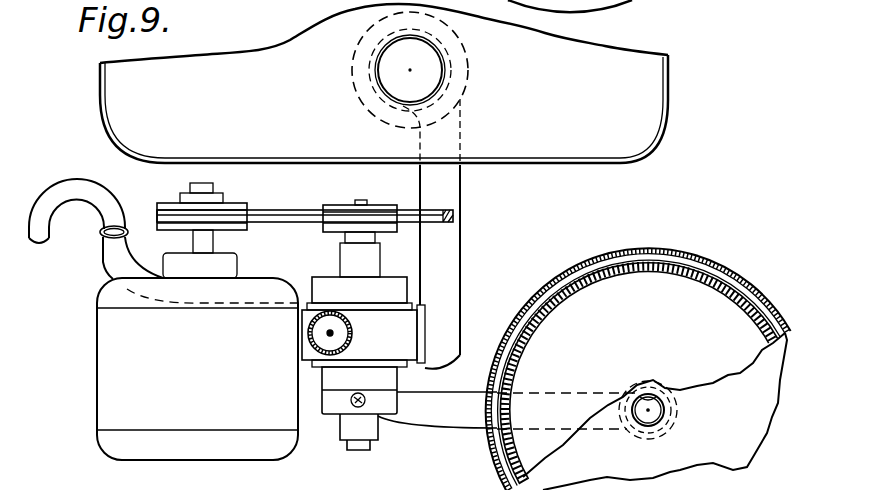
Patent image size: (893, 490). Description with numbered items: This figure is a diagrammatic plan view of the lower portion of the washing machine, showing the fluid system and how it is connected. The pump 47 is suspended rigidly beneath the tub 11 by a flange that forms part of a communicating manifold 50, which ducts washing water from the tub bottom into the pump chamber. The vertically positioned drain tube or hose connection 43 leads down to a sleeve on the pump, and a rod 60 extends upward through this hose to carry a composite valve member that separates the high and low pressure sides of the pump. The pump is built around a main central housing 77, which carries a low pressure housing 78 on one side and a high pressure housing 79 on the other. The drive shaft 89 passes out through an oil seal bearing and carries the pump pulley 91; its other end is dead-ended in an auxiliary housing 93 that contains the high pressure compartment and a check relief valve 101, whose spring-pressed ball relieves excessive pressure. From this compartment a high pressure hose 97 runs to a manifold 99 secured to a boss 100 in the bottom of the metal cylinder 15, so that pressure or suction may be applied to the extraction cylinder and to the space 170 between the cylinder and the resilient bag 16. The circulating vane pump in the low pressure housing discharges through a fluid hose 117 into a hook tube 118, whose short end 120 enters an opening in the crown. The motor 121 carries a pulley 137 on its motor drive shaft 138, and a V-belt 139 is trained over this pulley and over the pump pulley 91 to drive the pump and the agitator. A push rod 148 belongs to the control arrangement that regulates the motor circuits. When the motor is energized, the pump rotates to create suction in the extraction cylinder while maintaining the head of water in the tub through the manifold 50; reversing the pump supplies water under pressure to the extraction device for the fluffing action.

The tub 11 is at (635, 125).
The metal cylinder 15 is at (673, 250).
The resilient bag 16 is at (596, 272).
The tube or hose connection 43 is at (310, 343).
The pump 47 is at (410, 365).
The manifold 50 is at (452, 231).
The rod 60 is at (327, 333).
The main central housing 77 is at (402, 333).
The low pressure housing 78 is at (403, 287).
The high pressure housing 79 is at (321, 378).
The drive shaft 89 is at (362, 201).
The pulley 91 is at (373, 210).
The auxiliary housing 93 is at (383, 408).
The high pressure hose 97 is at (458, 423).
The manifold 99 is at (643, 396).
The boss 100 is at (673, 418).
The check relief valve 101 is at (355, 405).
The fluid hose 117 is at (110, 253).
The hook tube 118 is at (66, 183).
The short end 120 is at (40, 230).
The motor 121 is at (168, 447).
The pulley 137 is at (167, 202).
The motor drive shaft 138 is at (207, 239).
The V-belt 139 is at (258, 216).
The push rod 148 is at (455, 62).
The space 170 is at (737, 278).